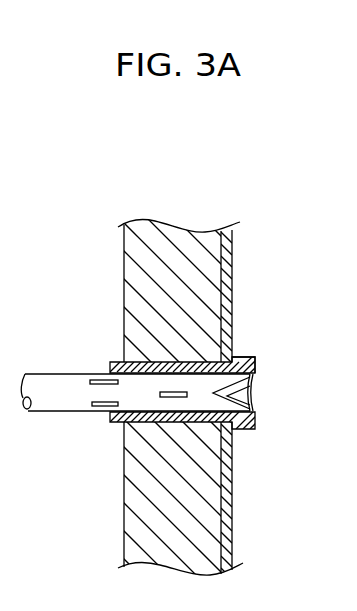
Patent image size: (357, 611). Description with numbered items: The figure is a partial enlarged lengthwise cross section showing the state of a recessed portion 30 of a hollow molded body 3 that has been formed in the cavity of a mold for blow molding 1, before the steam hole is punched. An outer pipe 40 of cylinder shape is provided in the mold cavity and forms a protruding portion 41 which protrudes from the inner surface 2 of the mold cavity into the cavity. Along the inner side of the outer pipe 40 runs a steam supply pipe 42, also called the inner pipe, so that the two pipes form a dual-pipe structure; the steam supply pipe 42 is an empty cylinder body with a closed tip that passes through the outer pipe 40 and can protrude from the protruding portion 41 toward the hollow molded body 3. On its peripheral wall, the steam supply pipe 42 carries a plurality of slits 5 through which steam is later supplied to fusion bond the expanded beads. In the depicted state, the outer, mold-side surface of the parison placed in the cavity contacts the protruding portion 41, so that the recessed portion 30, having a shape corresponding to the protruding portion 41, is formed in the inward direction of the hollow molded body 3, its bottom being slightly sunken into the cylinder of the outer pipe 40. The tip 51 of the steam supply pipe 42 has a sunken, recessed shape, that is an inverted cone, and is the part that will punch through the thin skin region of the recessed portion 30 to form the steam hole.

The mold for blow molding 1 is at (178, 363).
The inner surface of mold cavity 2 is at (212, 276).
The hollow molded body 3 is at (232, 237).
The slit 5 is at (92, 406).
The recessed portion 30 is at (175, 375).
The outer pipe 40 is at (108, 365).
The protruding portion 41 is at (257, 362).
The steam supply pipe 42 is at (27, 397).
The tip of steam supply pipe (recessed shape) 51 is at (225, 400).